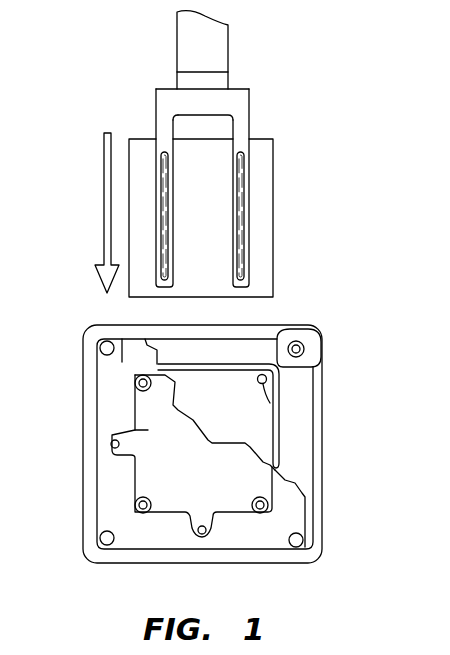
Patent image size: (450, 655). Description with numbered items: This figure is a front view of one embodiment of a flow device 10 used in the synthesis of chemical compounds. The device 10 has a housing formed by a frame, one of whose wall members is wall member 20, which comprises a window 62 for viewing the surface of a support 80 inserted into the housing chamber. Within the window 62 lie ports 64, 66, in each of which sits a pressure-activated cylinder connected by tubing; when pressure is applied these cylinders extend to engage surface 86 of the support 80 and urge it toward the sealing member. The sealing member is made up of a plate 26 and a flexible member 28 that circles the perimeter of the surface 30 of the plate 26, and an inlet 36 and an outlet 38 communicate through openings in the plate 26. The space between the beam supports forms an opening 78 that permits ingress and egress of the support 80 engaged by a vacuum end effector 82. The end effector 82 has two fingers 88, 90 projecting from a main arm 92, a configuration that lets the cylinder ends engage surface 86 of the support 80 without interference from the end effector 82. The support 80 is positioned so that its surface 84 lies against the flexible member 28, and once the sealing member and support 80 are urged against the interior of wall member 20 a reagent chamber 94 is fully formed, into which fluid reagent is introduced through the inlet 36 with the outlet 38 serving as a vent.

The flow device 10 is at (388, 291).
The wall member 20 is at (297, 395).
The plate 26 is at (323, 355).
The flexible member 28 is at (281, 437).
The surface 30 is at (239, 412).
The inlet 36 is at (136, 512).
The outlet 38 is at (282, 412).
The window 62 is at (133, 428).
The port 64 is at (275, 495).
The port 66 is at (135, 378).
The opening 78 is at (270, 325).
The support 80 is at (274, 200).
The vacuum end effector 82 is at (252, 149).
The surface 84 is at (262, 170).
The surface 86 is at (214, 232).
The finger 88 is at (158, 132).
The finger 90 is at (249, 102).
The main arm 92 is at (228, 37).
The reagent chamber 94 is at (227, 383).